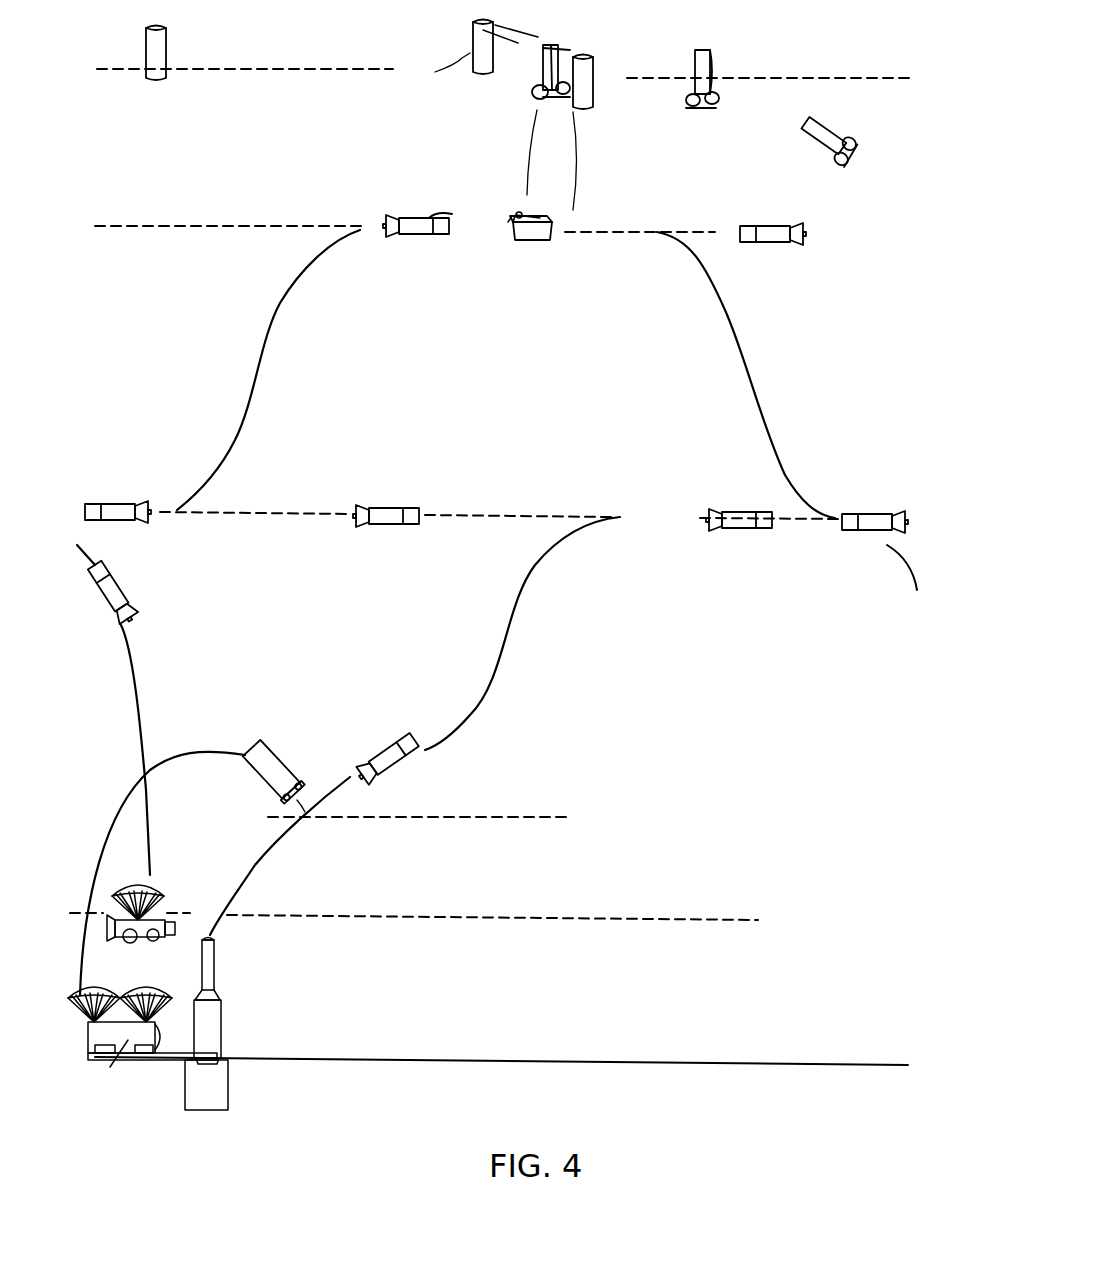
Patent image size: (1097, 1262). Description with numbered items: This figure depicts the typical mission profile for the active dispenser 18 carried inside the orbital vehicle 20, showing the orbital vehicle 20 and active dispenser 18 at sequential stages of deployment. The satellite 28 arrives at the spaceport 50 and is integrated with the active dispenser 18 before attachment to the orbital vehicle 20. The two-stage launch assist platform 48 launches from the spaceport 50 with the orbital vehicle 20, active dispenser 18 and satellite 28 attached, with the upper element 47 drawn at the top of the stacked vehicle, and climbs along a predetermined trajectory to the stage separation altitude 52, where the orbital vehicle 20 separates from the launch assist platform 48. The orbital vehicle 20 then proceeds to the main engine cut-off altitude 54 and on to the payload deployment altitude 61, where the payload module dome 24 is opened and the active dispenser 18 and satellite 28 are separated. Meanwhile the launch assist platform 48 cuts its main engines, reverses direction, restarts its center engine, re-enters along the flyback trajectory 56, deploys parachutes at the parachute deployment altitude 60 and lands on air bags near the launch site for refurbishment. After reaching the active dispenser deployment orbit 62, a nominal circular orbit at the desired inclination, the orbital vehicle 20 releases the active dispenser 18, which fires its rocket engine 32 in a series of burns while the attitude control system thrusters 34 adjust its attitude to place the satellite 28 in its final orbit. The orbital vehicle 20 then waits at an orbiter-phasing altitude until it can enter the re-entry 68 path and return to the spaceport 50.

The active dispenser 18 is at (540, 67).
The K-1 orbital vehicle 20 is at (425, 225).
The payload module dome 24 is at (440, 213).
The satellite 28 is at (165, 52).
The rocket engine 32 is at (508, 222).
The attitude control system thrusters 34 is at (515, 212).
The nose fairing 47 is at (214, 945).
The K-1 launch assist platform 48 is at (263, 760).
The spaceport 50 is at (228, 1078).
The stage separation altitude 52 is at (465, 817).
The main engine cut-off (MECO) altitude 54 is at (160, 512).
The flyback trajectory 56 is at (123, 803).
The parachute deployment altitude 60 is at (478, 917).
The payload deployment altitude 61 is at (148, 226).
The active dispenser deployment orbit 62 is at (300, 69).
The re-entry path 68 is at (903, 562).